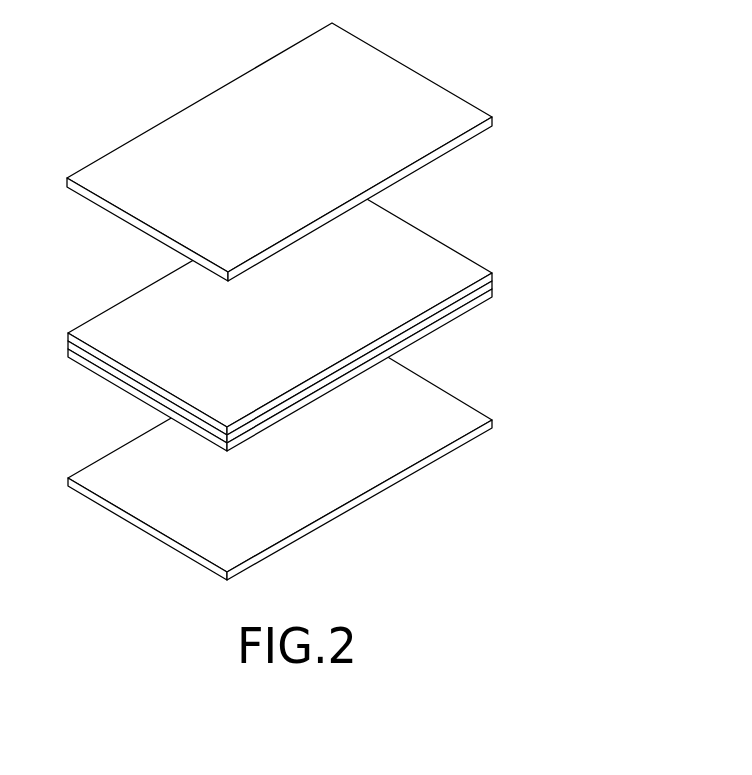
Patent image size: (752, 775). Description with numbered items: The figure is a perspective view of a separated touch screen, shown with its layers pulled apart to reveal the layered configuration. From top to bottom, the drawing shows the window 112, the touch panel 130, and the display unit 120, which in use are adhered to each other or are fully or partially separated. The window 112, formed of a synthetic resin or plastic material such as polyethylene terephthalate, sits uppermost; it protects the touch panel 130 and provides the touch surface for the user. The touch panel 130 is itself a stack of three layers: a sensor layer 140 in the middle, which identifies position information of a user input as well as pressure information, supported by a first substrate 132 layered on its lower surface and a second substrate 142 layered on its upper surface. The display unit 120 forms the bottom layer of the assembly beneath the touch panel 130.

The window 112 is at (491, 89).
The touch panel 130 is at (328, 315).
The second substrate 142 is at (494, 273).
The sensor layer 140 is at (494, 288).
The first substrate 132 is at (494, 296).
The display unit 120 is at (492, 397).